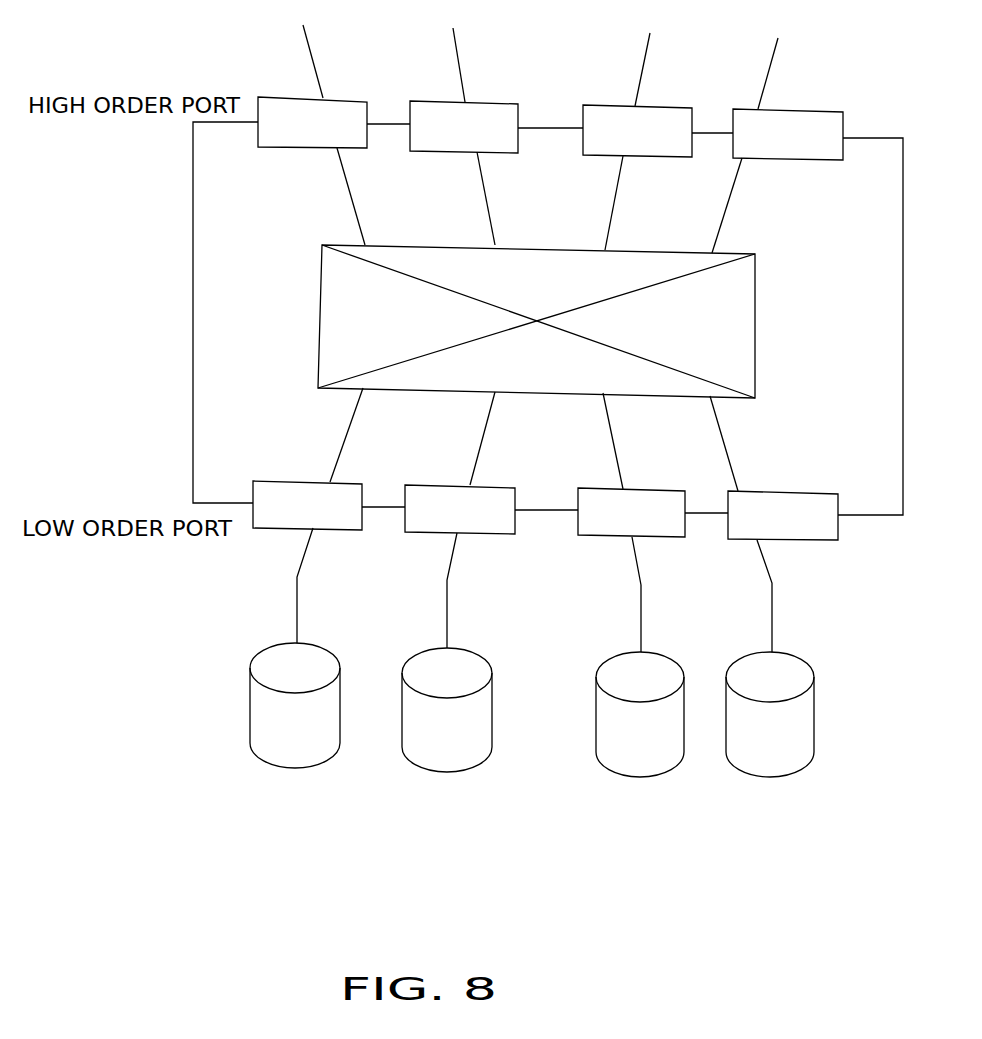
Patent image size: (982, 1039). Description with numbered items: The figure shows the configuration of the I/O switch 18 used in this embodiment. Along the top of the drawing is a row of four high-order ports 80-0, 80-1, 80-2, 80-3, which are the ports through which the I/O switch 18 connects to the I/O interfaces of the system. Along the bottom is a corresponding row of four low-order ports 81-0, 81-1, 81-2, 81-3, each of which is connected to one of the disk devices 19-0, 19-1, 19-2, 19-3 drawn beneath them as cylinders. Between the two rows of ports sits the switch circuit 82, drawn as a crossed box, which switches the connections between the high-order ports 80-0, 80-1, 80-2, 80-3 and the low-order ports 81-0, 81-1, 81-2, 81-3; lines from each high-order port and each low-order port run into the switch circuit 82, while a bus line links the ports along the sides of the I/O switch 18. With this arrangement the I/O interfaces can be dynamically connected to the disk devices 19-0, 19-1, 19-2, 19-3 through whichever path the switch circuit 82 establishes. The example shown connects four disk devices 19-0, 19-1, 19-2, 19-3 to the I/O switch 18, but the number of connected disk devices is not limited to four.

The I/O switch 18 is at (872, 138).
The switch circuit 82 is at (320, 327).
The high-order port 80-0 is at (354, 98).
The high-order port 80-1 is at (502, 103).
The high-order port 80-2 is at (602, 106).
The high-order port 80-3 is at (743, 109).
The low-order port 81-0 is at (340, 532).
The low-order port 81-1 is at (497, 535).
The low-order port 81-2 is at (662, 537).
The low-order port 81-3 is at (813, 540).
The disk device 19-0 is at (302, 767).
The disk device 19-1 is at (460, 770).
The disk device 19-2 is at (657, 773).
The disk device 19-3 is at (790, 773).